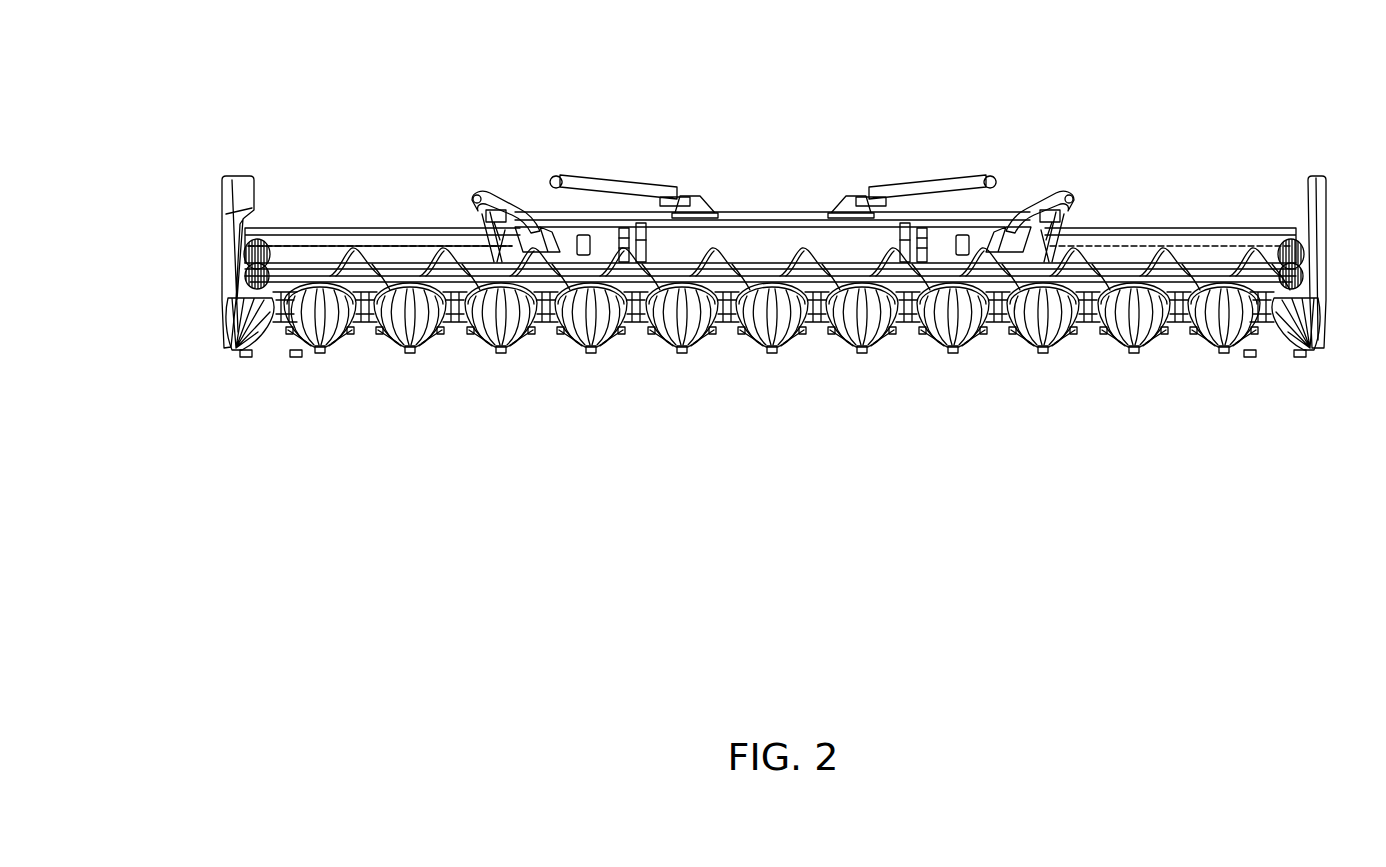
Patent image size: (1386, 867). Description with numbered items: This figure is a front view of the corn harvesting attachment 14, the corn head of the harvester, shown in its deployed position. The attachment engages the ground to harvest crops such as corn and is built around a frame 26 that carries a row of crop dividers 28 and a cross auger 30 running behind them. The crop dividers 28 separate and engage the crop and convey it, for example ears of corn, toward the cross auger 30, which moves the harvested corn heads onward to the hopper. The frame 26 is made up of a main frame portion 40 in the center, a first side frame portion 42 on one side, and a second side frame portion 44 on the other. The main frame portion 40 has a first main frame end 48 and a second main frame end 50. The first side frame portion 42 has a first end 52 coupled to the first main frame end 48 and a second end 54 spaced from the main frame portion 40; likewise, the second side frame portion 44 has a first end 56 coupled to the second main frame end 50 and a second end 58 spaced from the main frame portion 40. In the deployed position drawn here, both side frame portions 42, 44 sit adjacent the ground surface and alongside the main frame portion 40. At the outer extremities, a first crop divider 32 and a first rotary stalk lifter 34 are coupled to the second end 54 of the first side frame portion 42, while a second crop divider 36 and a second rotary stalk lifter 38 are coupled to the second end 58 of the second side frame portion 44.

The corn harvesting attachment 14 is at (1040, 93).
The frame 26 is at (713, 195).
The crop dividers 28 is at (503, 353).
The cross auger 30 is at (847, 274).
The first crop divider 32 is at (1320, 183).
The first rotary stalk lifter 34 is at (1290, 237).
The second crop divider 36 is at (241, 186).
The second rotary stalk lifter 38 is at (258, 240).
The main frame portion 40 is at (786, 217).
The first side frame portion 42 is at (1187, 237).
The second side frame portion 44 is at (386, 237).
The first main frame end 48 is at (1043, 182).
The second main frame end 50 is at (503, 194).
The first end of first side frame portion 52 is at (1084, 169).
The second end of first side frame portion 54 is at (1308, 166).
The first end of second side frame portion 56 is at (474, 181).
The second end of second side frame portion 58 is at (238, 149).